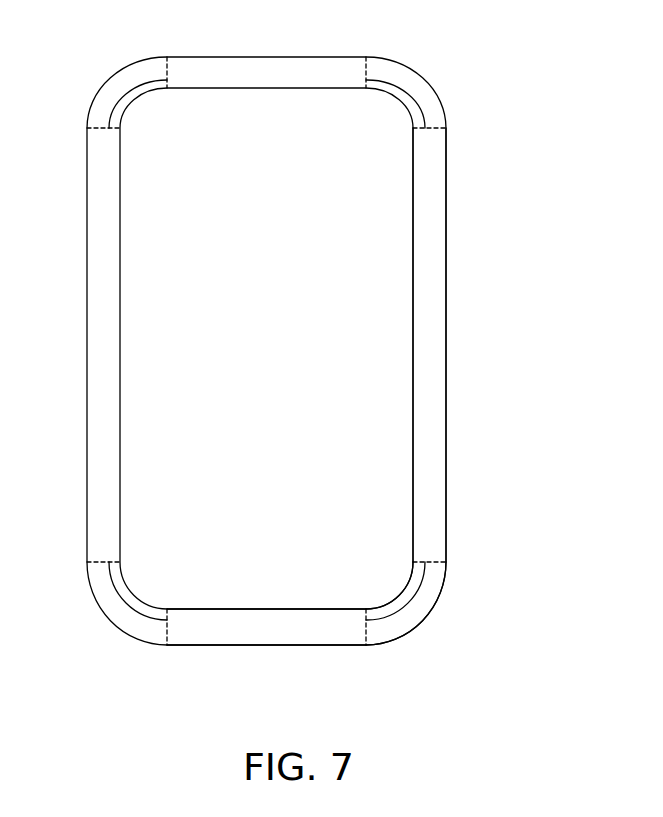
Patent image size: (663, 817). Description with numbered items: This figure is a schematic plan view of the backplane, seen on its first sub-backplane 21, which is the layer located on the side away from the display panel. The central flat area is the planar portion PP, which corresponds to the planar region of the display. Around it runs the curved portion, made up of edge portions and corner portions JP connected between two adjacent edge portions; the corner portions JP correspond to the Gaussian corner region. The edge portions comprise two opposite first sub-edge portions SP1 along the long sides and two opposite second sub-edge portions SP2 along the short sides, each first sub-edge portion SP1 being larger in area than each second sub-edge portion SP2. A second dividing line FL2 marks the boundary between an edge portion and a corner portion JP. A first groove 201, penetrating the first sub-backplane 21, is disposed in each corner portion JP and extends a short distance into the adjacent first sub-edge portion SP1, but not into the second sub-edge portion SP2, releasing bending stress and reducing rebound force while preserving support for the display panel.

The first sub-backplane 21 is at (290, 355).
The planar portion PP is at (383, 405).
The first sub-edge portion SP1 is at (433, 455).
The second sub-edge portion SP2 is at (262, 630).
The second dividing line FL2 is at (365, 633).
The corner portion JP is at (410, 612).
The first groove 201 is at (416, 599).